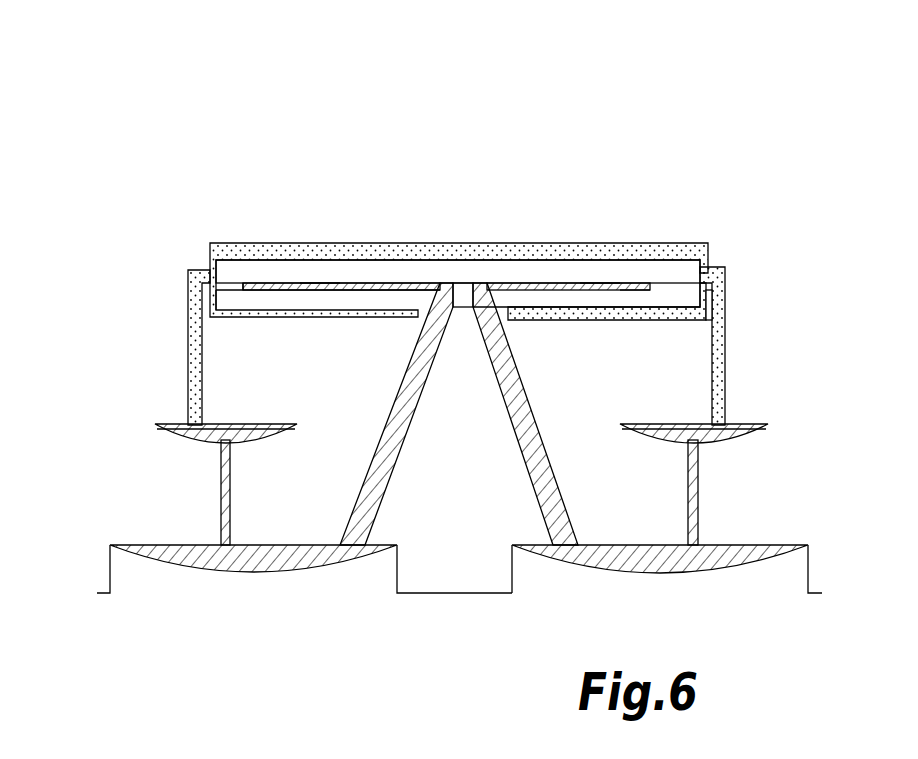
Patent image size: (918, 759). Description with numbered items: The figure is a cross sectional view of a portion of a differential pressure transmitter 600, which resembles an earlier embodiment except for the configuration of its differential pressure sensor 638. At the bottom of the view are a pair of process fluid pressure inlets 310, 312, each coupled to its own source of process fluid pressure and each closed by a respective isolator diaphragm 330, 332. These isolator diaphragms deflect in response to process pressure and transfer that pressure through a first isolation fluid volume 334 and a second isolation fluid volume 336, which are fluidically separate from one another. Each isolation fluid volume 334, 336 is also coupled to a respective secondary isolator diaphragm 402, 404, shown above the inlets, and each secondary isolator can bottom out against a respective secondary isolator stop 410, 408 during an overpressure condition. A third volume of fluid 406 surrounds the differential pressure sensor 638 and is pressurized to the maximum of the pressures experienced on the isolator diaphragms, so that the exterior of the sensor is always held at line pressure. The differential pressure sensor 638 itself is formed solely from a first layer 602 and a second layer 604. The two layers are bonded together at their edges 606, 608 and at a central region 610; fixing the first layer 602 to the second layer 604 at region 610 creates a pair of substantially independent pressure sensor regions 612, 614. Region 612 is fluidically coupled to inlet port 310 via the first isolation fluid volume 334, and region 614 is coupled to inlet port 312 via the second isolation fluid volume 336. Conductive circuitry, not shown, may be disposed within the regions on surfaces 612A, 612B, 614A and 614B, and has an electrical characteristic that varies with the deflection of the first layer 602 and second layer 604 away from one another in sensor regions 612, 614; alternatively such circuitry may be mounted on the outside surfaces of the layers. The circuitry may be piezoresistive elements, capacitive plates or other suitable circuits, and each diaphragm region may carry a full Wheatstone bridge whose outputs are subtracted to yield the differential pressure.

The transmitter 600 is at (531, 100).
The third volume of fluid 406 is at (262, 252).
The first layer 602 is at (688, 270).
The second layer 604 is at (695, 305).
The edge 606 is at (230, 278).
The edge 608 is at (700, 286).
The differential pressure sensor 638 is at (456, 243).
The region 610 is at (462, 280).
The pressure sensor region 612 is at (356, 243).
The surface 612A is at (262, 284).
The surface 612B is at (318, 286).
The pressure sensor region 614 is at (614, 245).
The surface 614A is at (640, 288).
The surface 614B is at (600, 281).
The secondary isolator diaphragm 402 is at (182, 430).
The secondary isolator diaphragm 404 is at (727, 433).
The secondary isolator stop 410 is at (252, 438).
The secondary isolator stop 408 is at (655, 440).
The isolator diaphragm 330 is at (168, 563).
The isolator diaphragm 332 is at (712, 572).
The first isolation fluid volume 334 is at (248, 556).
The second isolation fluid volume 336 is at (597, 556).
The process fluid pressure inlet 310 is at (313, 614).
The process fluid pressure inlet 312 is at (620, 617).